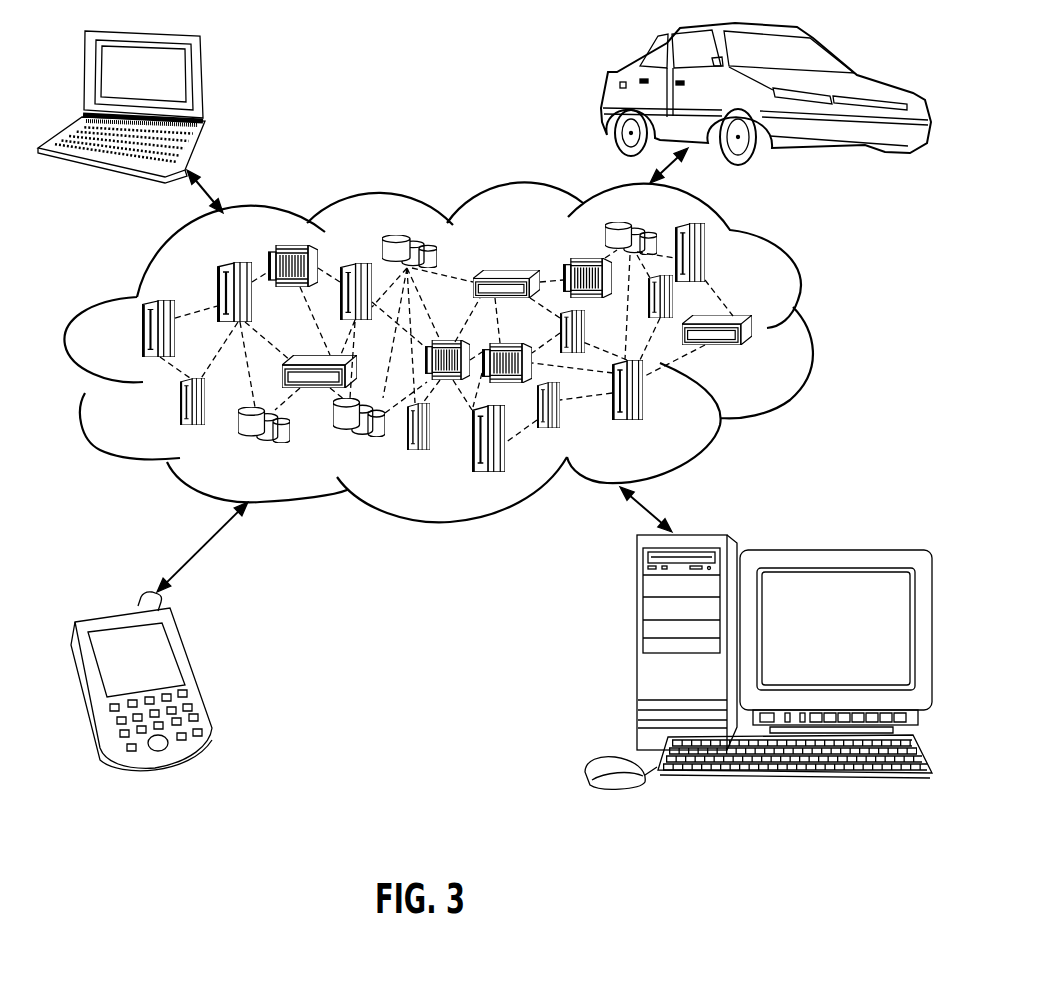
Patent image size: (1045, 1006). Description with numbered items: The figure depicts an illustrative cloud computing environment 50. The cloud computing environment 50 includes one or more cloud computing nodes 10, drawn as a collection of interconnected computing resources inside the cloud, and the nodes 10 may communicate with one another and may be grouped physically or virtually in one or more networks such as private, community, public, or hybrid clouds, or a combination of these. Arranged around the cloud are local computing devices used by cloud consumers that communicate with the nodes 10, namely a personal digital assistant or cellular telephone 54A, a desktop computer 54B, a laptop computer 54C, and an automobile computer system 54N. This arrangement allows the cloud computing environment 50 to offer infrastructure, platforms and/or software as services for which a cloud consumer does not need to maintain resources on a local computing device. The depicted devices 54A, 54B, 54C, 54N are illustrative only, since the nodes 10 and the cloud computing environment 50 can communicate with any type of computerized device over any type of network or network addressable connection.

The cloud computing node 10 is at (772, 350).
The cloud computing environment 50 is at (797, 290).
The personal digital assistant (PDA) or cellular telephone 54A is at (193, 670).
The desktop computer 54B is at (635, 650).
The laptop computer 54C is at (203, 78).
The automobile computer system 54N is at (610, 85).